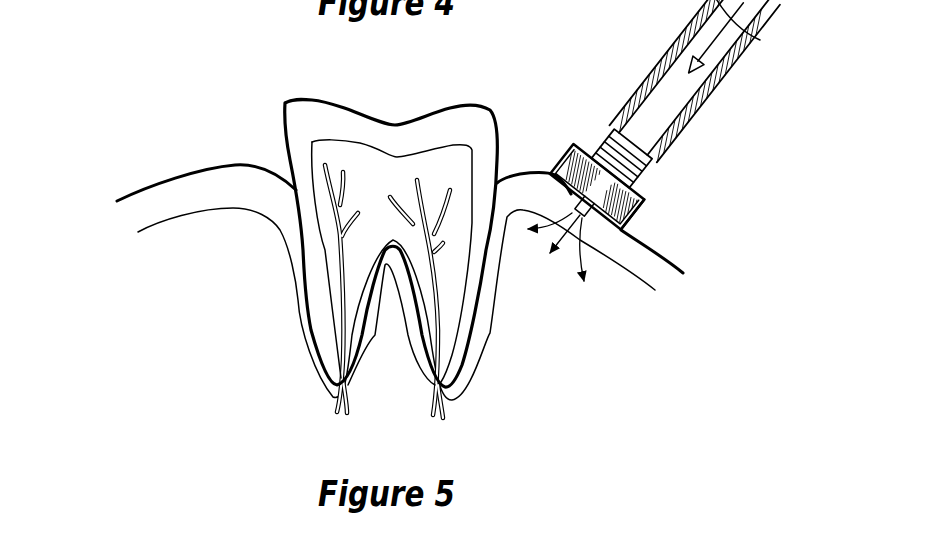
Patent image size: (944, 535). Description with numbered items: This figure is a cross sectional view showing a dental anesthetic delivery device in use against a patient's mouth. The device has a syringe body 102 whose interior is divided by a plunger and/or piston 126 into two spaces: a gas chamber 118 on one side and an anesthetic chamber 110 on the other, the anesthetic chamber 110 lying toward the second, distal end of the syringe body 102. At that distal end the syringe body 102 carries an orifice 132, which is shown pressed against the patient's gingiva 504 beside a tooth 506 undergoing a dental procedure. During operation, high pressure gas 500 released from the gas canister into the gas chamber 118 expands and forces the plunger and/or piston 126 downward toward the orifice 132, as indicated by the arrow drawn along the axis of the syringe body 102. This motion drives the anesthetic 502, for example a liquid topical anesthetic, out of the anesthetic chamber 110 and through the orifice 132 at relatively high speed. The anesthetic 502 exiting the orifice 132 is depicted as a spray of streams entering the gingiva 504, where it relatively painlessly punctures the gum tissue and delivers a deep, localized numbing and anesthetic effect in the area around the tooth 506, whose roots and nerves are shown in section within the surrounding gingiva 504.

The syringe body 102 is at (712, 88).
The anesthetic chamber 110 is at (580, 143).
The gas chamber 118 is at (668, 93).
The plunger and/or piston 126 is at (602, 163).
The orifice 132 is at (642, 190).
The expanding gas 500 is at (743, 3).
The anesthetic 502 is at (584, 265).
The gingiva 504 is at (193, 183).
The tooth 506 is at (302, 117).